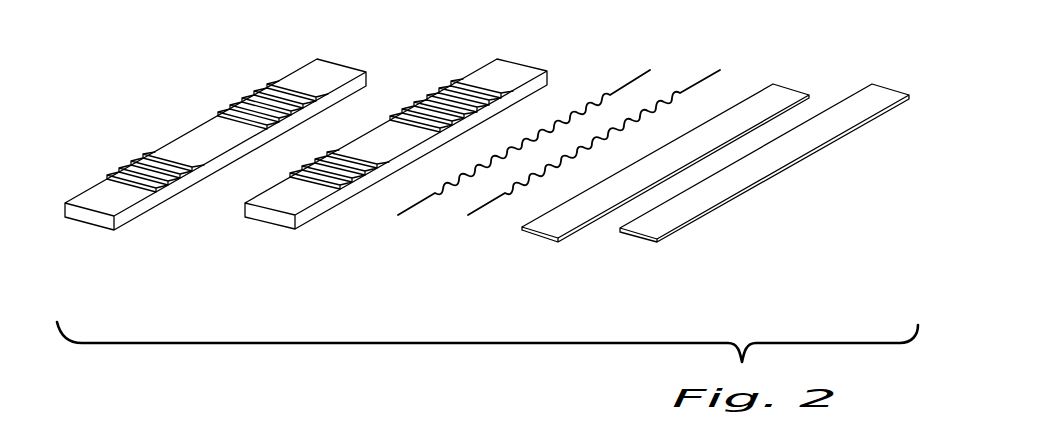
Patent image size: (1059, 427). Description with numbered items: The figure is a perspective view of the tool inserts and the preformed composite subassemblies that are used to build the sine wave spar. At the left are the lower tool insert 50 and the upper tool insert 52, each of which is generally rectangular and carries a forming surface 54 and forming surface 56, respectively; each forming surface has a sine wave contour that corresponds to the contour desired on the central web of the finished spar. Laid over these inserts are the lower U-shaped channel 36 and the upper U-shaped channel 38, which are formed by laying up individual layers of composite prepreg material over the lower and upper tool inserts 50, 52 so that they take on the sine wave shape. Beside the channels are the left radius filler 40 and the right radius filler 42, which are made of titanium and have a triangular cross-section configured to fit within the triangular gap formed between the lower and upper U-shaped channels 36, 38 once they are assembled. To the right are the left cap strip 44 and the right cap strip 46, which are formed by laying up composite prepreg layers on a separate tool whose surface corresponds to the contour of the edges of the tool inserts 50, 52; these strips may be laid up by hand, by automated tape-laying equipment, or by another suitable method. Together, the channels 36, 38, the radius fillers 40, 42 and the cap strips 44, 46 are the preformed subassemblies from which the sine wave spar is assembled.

The lower U-shaped channel 36 is at (215, 140).
The upper U-shaped channel 38 is at (415, 120).
The left radius filler 40 is at (633, 78).
The right radius filler 42 is at (700, 80).
The left cap strip 44 is at (790, 88).
The right cap strip 46 is at (888, 88).
The lower tool insert 50 is at (215, 186).
The upper tool insert 52 is at (386, 144).
The forming surface 54 is at (142, 151).
The forming surface 56 is at (431, 93).